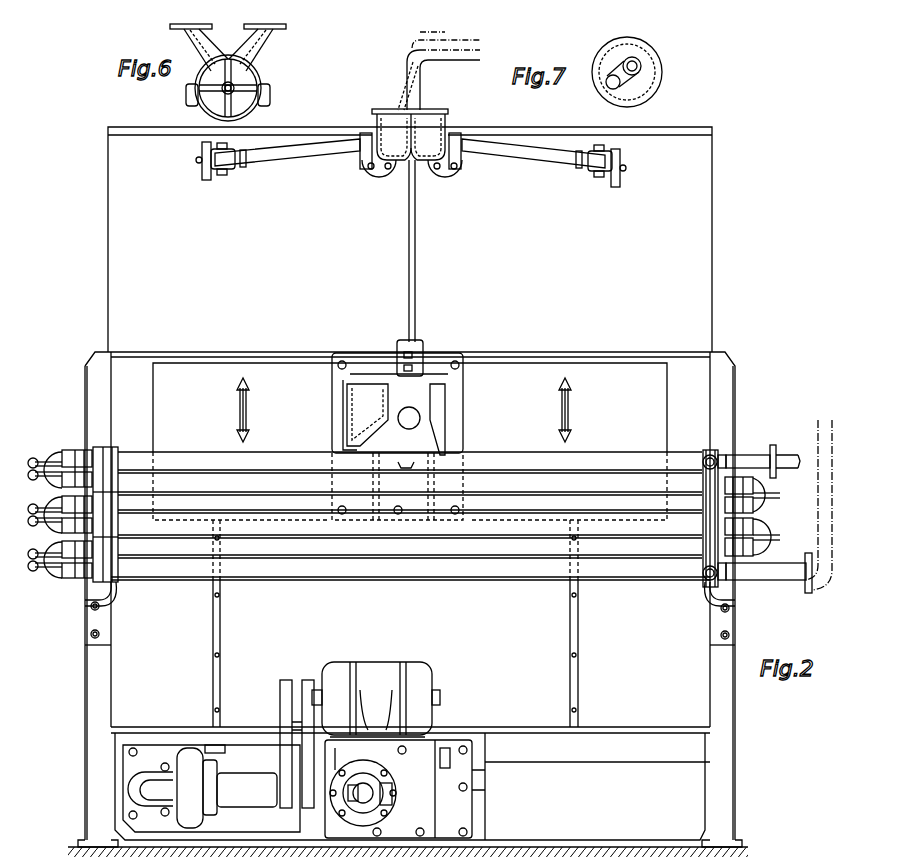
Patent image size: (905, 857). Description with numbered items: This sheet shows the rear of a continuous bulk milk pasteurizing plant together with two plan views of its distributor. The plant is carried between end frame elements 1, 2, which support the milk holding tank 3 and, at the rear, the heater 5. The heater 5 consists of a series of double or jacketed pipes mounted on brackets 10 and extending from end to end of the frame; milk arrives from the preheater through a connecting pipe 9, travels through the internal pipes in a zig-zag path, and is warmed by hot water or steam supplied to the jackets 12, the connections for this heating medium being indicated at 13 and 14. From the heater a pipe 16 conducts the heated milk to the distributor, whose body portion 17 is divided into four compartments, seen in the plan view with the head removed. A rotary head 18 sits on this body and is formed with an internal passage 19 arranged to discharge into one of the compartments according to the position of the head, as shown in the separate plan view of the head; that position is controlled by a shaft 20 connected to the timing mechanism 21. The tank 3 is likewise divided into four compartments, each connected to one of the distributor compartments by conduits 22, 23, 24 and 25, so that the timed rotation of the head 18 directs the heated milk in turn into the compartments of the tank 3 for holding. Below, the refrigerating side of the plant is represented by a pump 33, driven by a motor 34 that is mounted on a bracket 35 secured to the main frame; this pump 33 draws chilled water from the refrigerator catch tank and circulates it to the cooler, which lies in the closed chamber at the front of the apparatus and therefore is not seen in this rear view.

In FIG. 2, the end frame element 1 is at (727, 752).
In FIG. 2, the end frame element 2 is at (98, 752).
In FIG. 2, the milk holding tank 3 is at (714, 283).
In FIG. 2, the heater 5 is at (440, 548).
In FIG. 2, the connecting pipe 9 is at (796, 438).
In FIG. 2, the brackets 10 is at (100, 602).
In FIG. 2, the jackets 12 is at (268, 460).
In FIG. 2, the heating medium connection 13 is at (717, 458).
In FIG. 2, the heating medium connection 14 is at (704, 580).
In FIG. 2, the pipe 16 is at (828, 500).
In FIG. 2, the distributor body portion 17 is at (432, 124).
In FIG. 7, the rotary head 18 is at (660, 60).
In FIG. 2, the rotary head 18 is at (417, 92).
In FIG. 7, the internal passage 19 is at (616, 80).
In FIG. 2, the internal passage 19 is at (402, 96).
In FIG. 2, the shaft 20 is at (409, 202).
In FIG. 2, the timing mechanism 21 is at (460, 432).
In FIG. 6, the conduit 22 is at (255, 47).
In FIG. 6, the conduit 23 is at (197, 42).
In FIG. 2, the conduit 24 is at (535, 160).
In FIG. 2, the conduit 25 is at (298, 158).
In FIG. 2, the pump 33 is at (188, 768).
In FIG. 2, the motor 34 is at (378, 680).
In FIG. 2, the bracket 35 is at (420, 756).